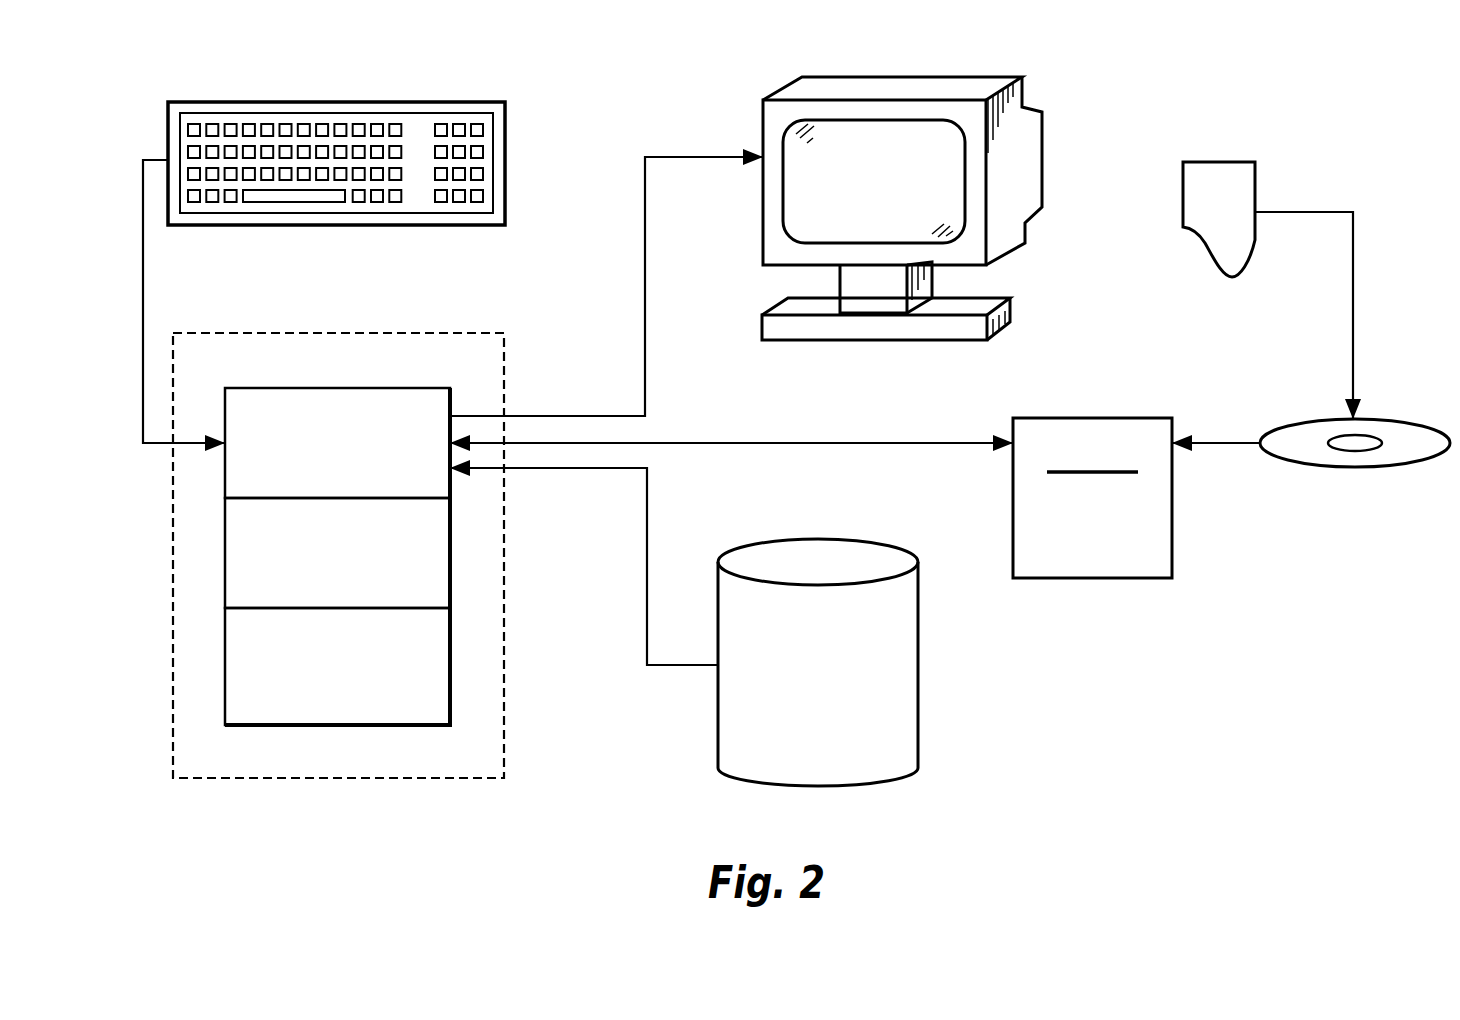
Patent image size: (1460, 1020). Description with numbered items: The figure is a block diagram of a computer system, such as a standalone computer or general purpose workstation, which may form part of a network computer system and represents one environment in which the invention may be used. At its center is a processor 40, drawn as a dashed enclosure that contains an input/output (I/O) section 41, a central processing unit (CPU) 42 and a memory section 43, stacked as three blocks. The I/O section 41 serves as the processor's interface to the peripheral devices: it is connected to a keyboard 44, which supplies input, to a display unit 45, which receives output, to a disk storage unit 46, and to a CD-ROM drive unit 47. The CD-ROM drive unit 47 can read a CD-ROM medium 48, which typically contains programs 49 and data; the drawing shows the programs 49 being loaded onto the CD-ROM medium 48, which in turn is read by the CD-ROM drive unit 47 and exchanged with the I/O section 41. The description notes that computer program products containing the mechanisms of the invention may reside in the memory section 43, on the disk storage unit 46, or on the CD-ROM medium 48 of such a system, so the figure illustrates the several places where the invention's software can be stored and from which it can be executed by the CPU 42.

The processor 40 is at (453, 332).
The input/output (I/O) section 41 is at (315, 393).
The central processing unit (CPU) 42 is at (452, 572).
The memory section 43 is at (453, 708).
The keyboard 44 is at (480, 103).
The display unit 45 is at (972, 87).
The disk storage unit 46 is at (913, 638).
The CD-ROM drive unit 47 is at (1042, 418).
The CD-ROM medium 48 is at (1325, 423).
The programs 49 is at (1198, 173).